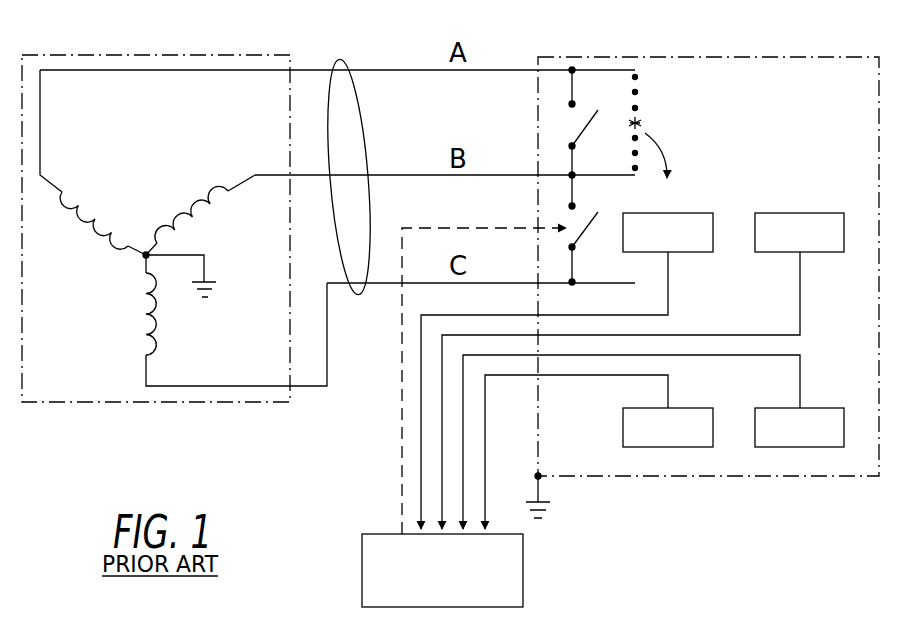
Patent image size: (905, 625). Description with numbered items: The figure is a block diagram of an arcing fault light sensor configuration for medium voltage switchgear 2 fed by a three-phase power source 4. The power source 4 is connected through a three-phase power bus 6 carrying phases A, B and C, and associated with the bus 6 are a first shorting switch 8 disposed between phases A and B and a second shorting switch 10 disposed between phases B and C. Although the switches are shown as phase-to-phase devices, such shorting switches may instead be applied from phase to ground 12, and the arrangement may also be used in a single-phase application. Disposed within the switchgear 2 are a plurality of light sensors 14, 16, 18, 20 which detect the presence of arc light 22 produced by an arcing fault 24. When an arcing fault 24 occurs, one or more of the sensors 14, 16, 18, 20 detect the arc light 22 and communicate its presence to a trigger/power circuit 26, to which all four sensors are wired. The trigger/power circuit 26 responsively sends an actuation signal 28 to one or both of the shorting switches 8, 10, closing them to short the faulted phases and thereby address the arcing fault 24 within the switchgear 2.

The switchgear 2 is at (727, 477).
The three-phase power source 4 is at (115, 403).
The three-phase power bus 6 is at (350, 72).
The first shorting switch 8 is at (583, 130).
The second shorting switch 10 is at (585, 228).
The ground 12 is at (217, 285).
The light sensor 14 is at (690, 213).
The light sensor 16 is at (822, 213).
The light sensor 18 is at (690, 408).
The light sensor 20 is at (822, 408).
The arc light 22 is at (668, 148).
The arcing fault 24 is at (645, 122).
The trigger/power circuit 26 is at (370, 533).
The actuation signal 28 is at (447, 227).